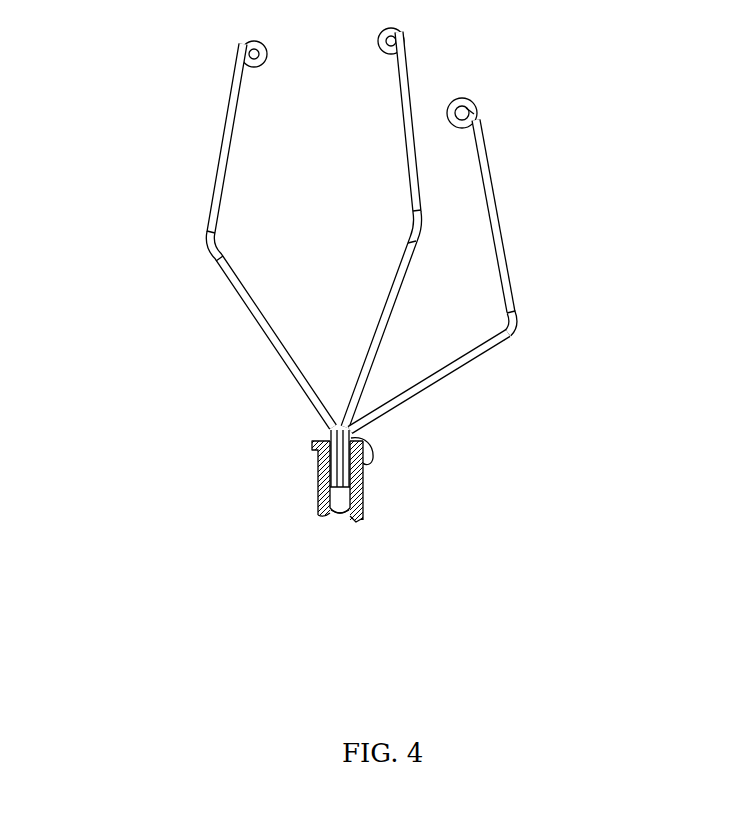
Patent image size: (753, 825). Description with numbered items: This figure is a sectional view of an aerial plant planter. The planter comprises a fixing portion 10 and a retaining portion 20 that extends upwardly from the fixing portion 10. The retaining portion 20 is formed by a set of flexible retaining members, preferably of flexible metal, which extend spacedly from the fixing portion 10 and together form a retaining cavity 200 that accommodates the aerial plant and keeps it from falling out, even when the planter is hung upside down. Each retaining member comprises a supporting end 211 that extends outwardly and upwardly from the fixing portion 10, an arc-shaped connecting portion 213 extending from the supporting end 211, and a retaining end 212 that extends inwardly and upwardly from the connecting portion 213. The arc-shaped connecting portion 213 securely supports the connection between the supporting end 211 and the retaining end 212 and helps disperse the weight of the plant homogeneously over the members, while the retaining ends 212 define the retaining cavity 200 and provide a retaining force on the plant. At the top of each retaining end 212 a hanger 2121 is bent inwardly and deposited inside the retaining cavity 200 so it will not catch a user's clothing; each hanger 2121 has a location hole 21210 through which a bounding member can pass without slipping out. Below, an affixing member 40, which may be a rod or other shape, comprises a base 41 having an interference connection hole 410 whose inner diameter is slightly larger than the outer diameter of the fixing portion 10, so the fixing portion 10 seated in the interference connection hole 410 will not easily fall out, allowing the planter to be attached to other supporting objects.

The fixing portion 10 is at (327, 438).
The retaining portion 20 is at (140, 167).
The retaining cavity 200 is at (312, 225).
The supporting end 211 is at (440, 378).
The retaining end 212 is at (498, 230).
The connecting portion 213 is at (517, 328).
The hanger 2121 is at (470, 100).
The location hole 21210 is at (483, 135).
The affixing member 40 is at (377, 480).
The base 41 is at (362, 493).
The interference connection hole 410 is at (353, 513).